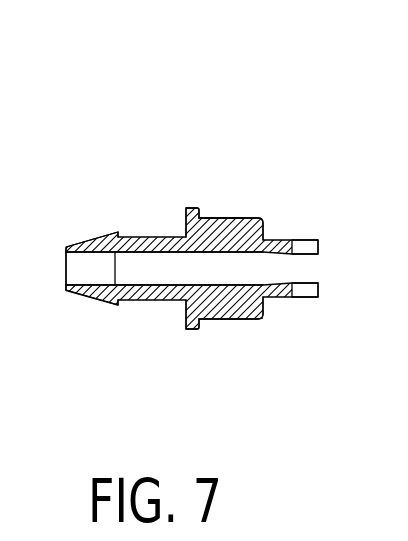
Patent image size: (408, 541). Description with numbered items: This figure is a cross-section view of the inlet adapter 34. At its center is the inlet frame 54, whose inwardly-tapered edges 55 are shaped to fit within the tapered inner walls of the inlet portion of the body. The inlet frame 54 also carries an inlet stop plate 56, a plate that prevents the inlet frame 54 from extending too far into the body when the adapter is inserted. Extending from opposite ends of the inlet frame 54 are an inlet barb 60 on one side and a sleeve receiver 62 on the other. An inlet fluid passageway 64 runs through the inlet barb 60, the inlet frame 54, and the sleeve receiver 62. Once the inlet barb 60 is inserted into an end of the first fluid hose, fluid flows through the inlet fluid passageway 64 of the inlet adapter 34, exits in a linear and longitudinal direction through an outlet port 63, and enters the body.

The inlet adapter 34 is at (135, 153).
The inlet frame 54 is at (238, 220).
The inwardly-tapered edges 55 is at (225, 218).
The inlet stop plate 56 is at (193, 207).
The inlet barb 60 is at (93, 299).
The sleeve receiver 62 is at (305, 248).
The outlet port 63 is at (312, 268).
The inlet fluid passageway 64 is at (157, 267).